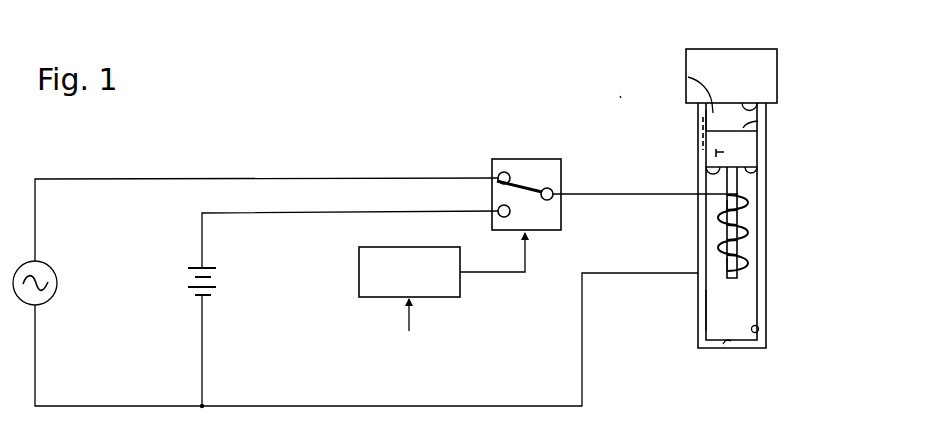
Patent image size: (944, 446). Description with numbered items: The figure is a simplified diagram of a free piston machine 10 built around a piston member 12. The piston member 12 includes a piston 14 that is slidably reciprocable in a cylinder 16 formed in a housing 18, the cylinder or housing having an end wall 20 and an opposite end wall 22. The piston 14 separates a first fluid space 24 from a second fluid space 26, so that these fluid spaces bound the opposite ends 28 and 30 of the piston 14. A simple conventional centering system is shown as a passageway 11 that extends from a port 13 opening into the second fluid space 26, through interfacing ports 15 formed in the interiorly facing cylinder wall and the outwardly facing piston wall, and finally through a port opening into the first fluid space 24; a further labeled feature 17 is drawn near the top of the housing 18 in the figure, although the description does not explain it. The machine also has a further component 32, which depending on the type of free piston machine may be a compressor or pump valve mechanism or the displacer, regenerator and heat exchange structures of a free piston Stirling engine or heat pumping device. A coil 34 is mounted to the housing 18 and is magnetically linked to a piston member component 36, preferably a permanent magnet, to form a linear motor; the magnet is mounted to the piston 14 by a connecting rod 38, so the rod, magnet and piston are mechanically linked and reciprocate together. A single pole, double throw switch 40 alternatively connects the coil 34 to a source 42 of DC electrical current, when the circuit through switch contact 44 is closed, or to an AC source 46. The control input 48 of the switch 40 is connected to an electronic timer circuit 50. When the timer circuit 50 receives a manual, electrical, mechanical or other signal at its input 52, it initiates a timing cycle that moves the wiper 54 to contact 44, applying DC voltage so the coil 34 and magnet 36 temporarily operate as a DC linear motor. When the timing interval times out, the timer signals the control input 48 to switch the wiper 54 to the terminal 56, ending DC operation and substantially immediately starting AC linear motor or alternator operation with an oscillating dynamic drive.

The free piston machine 10 is at (620, 96).
The passageway 11 is at (724, 152).
The piston member 12 is at (757, 186).
The port 13 is at (705, 177).
The piston 14 is at (745, 138).
The interfacing ports 15 is at (712, 151).
The cylinder 16 is at (762, 333).
The cam 17 is at (688, 77).
The housing 18 is at (767, 272).
The end wall 20 is at (723, 344).
The opposite end wall 22 is at (758, 104).
The first fluid space 24 is at (718, 123).
The second fluid space 26 is at (717, 302).
The piston end 28 is at (758, 121).
The piston end 30 is at (765, 176).
The further component 32 is at (735, 55).
The coil 34 is at (722, 262).
The piston member component 36 is at (748, 222).
The connecting rod 38 is at (725, 206).
The single pole, double throw switch 40 is at (532, 159).
The source of DC electrical current 42 is at (197, 290).
The switch contact 44 is at (498, 217).
The AC source 46 is at (50, 265).
The control input 48 is at (527, 255).
The electronic timer circuit 50 is at (461, 297).
The timer input 52 is at (407, 324).
The wiper 54 is at (533, 188).
The terminal 56 is at (505, 170).